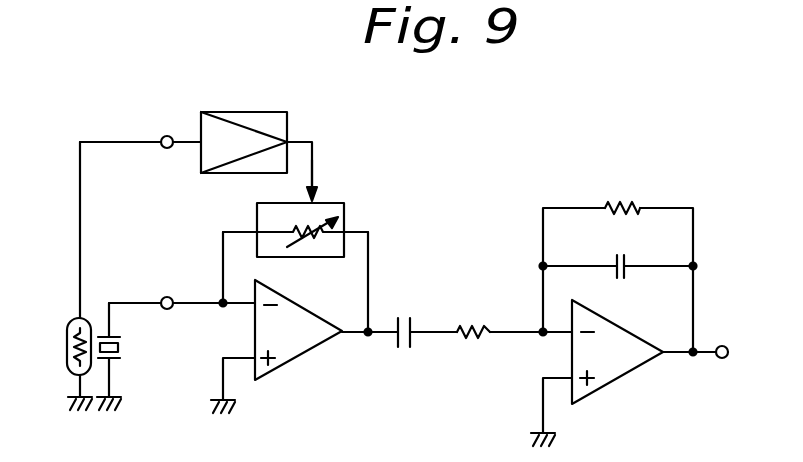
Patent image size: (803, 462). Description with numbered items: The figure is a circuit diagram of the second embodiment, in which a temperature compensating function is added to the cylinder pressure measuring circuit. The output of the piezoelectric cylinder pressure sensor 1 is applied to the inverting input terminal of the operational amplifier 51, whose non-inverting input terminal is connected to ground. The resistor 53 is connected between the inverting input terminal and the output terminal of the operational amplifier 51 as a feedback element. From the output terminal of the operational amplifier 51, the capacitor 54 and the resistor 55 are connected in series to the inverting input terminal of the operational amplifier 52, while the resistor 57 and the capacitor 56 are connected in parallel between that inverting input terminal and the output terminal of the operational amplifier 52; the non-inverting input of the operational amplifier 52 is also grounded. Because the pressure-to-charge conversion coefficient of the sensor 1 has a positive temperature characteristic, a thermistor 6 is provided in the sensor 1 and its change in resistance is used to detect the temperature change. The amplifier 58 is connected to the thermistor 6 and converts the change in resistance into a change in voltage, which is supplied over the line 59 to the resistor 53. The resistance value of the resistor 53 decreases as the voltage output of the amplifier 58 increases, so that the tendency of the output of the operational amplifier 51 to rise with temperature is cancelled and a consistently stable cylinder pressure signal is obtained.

The piezoelectric cylinder pressure sensor 1 is at (122, 348).
The thermistor 6 is at (83, 323).
The operational amplifier 51 is at (290, 362).
The operational amplifier 52 is at (617, 380).
The resistor 53 is at (344, 216).
The capacitor 54 is at (403, 317).
The resistor 55 is at (475, 322).
The capacitor 56 is at (627, 233).
The resistor 57 is at (620, 207).
The amplifier 58 is at (252, 112).
The control signal line 59 is at (312, 176).